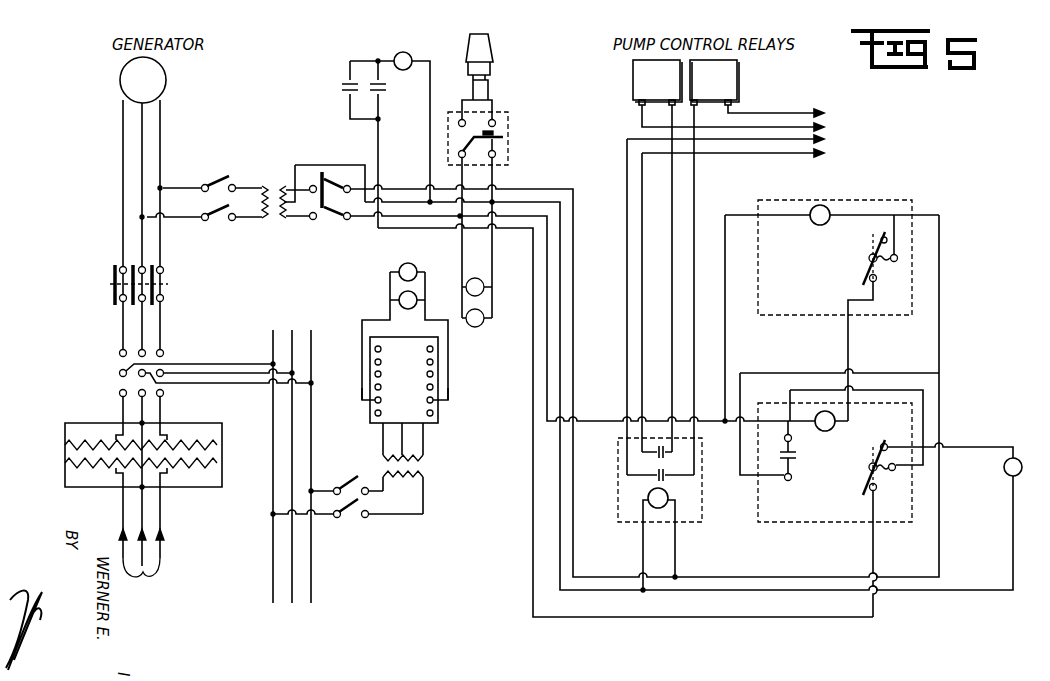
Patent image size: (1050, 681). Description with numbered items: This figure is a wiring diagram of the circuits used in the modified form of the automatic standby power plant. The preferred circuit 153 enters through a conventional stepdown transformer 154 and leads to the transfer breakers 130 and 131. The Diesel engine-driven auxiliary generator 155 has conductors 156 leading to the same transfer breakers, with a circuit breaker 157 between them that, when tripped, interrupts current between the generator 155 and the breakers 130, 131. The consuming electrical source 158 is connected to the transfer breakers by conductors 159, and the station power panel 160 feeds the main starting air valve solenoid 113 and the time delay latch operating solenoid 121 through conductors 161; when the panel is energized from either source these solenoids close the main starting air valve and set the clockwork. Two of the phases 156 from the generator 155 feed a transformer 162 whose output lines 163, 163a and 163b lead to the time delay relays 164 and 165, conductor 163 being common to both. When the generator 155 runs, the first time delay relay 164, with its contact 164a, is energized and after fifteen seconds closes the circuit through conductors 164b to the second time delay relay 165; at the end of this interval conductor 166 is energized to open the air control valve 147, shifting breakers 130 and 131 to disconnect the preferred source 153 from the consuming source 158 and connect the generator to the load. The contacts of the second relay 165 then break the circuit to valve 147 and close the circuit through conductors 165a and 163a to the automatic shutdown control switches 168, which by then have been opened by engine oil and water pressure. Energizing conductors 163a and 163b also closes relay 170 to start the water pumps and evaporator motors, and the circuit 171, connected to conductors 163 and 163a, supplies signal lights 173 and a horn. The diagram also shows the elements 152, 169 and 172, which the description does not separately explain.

The auxiliary circuit energizing generator 155 is at (166, 80).
The conductors 156 is at (126, 152).
The circuit breaker 157 is at (165, 279).
The consuming electrical source 158 is at (276, 334).
The conductors 159 is at (225, 380).
The station power panel 160 is at (414, 369).
The conductors 161 is at (360, 389).
The transformer 162 is at (262, 180).
The output line 163 is at (300, 205).
The output line 163a is at (563, 208).
The output line 163b is at (574, 195).
The time delay relay 164 is at (824, 205).
The relay contact 164a is at (882, 262).
The conductors 164b is at (895, 240).
The second time delay relay 165 is at (912, 433).
The conductors 165a is at (875, 516).
The conductor 166 is at (798, 450).
The automatic shutdown control switches 168 is at (380, 80).
The conductor 169 is at (645, 543).
The relay 170 is at (648, 498).
The circuit 171 is at (462, 166).
The control handle 172 is at (489, 48).
The signal lights 173 is at (482, 294).
The lamp 152 is at (410, 53).
The preferred circuit 153 is at (141, 539).
The stepdown transformer 154 is at (65, 456).
The main starting air valve solenoid 113 is at (398, 266).
The time delay latch operating solenoid 121 is at (408, 309).
The transfer breaker 131 is at (110, 360).
The transfer breaker 130 is at (110, 384).
The air control valve 147 is at (1003, 467).